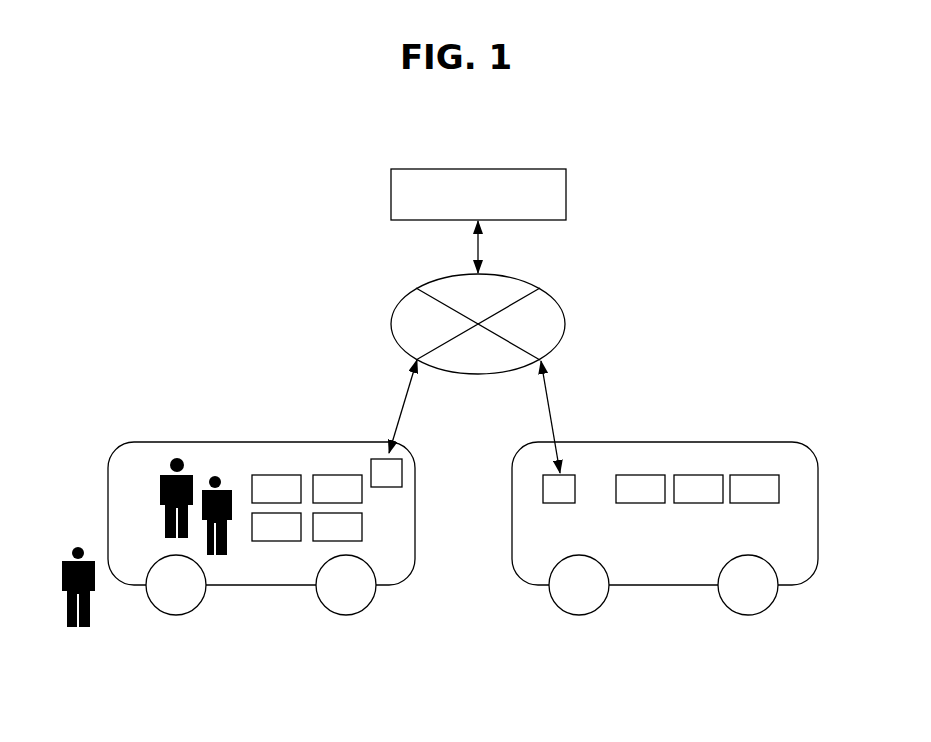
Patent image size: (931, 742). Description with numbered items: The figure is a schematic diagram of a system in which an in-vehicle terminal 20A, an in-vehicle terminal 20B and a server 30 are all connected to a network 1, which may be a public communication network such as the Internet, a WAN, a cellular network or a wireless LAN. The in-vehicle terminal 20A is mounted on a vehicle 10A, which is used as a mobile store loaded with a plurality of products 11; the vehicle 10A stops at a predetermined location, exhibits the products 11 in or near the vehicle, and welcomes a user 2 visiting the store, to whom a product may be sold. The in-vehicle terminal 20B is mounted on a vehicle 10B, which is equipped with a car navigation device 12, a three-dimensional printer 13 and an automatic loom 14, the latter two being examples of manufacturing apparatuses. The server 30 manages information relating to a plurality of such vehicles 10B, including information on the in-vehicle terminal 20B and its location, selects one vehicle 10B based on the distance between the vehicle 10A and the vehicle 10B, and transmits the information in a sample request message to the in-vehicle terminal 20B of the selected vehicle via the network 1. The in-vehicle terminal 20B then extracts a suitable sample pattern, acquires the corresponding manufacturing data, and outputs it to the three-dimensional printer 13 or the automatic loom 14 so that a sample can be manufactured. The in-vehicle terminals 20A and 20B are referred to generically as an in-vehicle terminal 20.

The network 1 is at (558, 302).
The user 2 is at (215, 476).
The vehicle 10A is at (108, 485).
The vehicle 10B is at (512, 530).
The product 11 is at (277, 475).
The car navigation device 12 is at (320, 541).
The 3D printer 13 is at (698, 475).
The automatic loom 14 is at (755, 475).
The in-vehicle terminal 20 is at (538, 497).
The in-vehicle terminal 20A is at (385, 487).
The in-vehicle terminal 20B is at (570, 475).
The server 30 is at (566, 200).